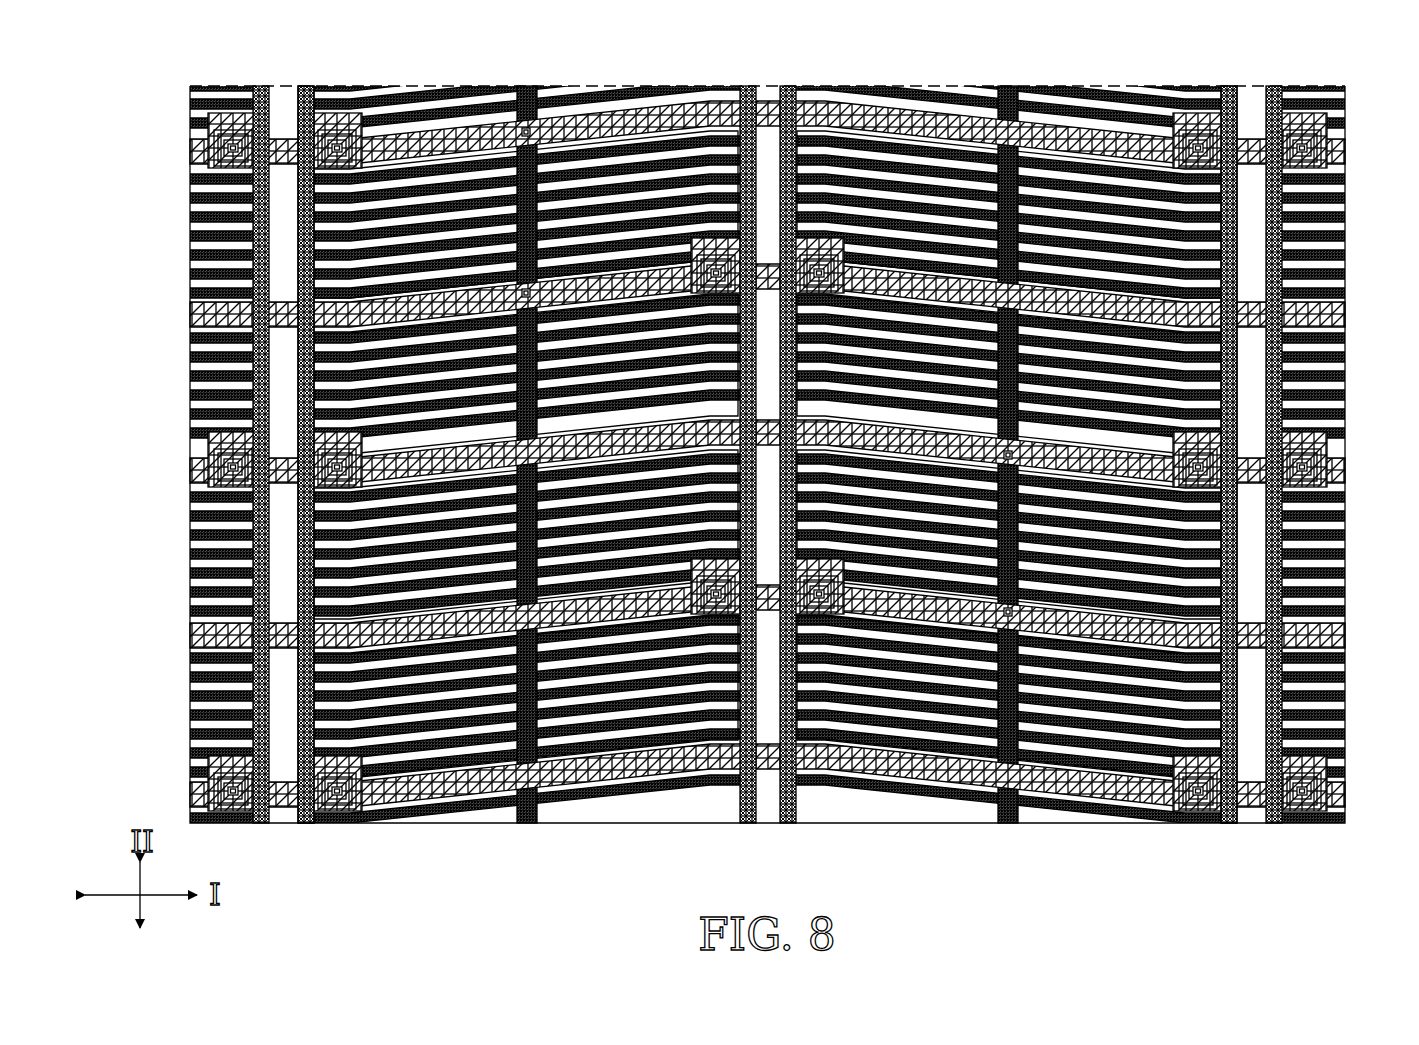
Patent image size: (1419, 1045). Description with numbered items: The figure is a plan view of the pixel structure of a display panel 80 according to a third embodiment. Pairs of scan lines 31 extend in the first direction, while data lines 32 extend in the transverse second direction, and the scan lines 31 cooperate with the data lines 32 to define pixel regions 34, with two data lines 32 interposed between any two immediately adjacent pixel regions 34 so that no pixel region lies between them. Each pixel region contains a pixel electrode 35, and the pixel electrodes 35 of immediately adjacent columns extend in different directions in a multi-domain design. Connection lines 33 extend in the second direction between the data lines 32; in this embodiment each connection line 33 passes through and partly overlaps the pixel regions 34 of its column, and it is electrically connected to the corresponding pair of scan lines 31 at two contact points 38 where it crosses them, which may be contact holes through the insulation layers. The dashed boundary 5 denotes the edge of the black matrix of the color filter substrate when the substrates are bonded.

The edge of a black matrix 5 is at (610, 760).
The scan line 31 is at (420, 153).
The data line 32 is at (261, 86).
The connection line 33 is at (527, 86).
The pixel region 34 is at (340, 238).
The pixel electrode 35 is at (313, 692).
The contact point 38 is at (521, 131).
The display panel 80 is at (1352, 82).